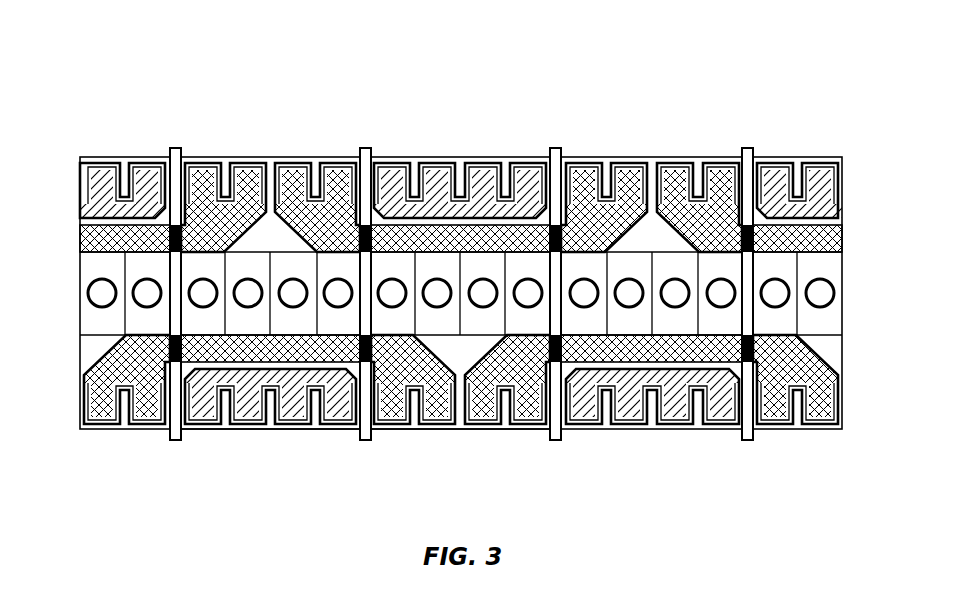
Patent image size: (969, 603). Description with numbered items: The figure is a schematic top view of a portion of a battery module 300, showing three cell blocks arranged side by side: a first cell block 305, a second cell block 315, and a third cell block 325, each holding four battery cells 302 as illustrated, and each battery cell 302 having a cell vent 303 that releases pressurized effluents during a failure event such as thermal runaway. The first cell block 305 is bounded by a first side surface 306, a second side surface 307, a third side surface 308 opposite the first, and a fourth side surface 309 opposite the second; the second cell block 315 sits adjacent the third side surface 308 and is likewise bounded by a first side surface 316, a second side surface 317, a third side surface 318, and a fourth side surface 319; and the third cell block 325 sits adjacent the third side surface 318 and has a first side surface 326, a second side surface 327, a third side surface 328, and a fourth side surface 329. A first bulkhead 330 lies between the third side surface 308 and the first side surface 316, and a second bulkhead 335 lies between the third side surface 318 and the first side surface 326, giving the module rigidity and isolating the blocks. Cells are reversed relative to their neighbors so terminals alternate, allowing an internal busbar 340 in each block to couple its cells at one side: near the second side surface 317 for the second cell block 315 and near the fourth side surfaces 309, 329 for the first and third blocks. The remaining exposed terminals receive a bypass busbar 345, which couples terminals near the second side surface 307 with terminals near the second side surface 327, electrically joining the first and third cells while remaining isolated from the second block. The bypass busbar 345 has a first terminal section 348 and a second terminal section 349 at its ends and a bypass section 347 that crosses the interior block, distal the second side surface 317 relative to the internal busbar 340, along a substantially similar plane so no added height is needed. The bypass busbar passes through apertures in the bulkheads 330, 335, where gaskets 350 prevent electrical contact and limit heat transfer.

The battery module 300 is at (198, 68).
The battery cell 302 is at (843, 322).
The cell vent 303 is at (835, 288).
The first cell block 305 is at (247, 157).
The first side surface 306 is at (180, 270).
The second side surface 307 is at (325, 157).
The third side surface 308 is at (363, 165).
The fourth side surface 309 is at (297, 430).
The second cell block 315 is at (480, 157).
The first side surface 316 is at (373, 192).
The second side surface 317 is at (520, 157).
The third side surface 318 is at (563, 165).
The fourth side surface 319 is at (488, 430).
The third cell block 325 is at (675, 157).
The first side surface 326 is at (565, 192).
The second side surface 327 is at (718, 157).
The third side surface 328 is at (755, 173).
The fourth side surface 329 is at (647, 430).
The first bulkhead 330 is at (367, 440).
The second bulkhead 335 is at (560, 440).
The internal busbar 340 is at (717, 417).
The bypass busbar 345 is at (825, 373).
The bypass section 347 is at (233, 368).
The first terminal section 348 is at (100, 367).
The second terminal section 349 is at (416, 422).
The gasket 350 is at (176, 365).